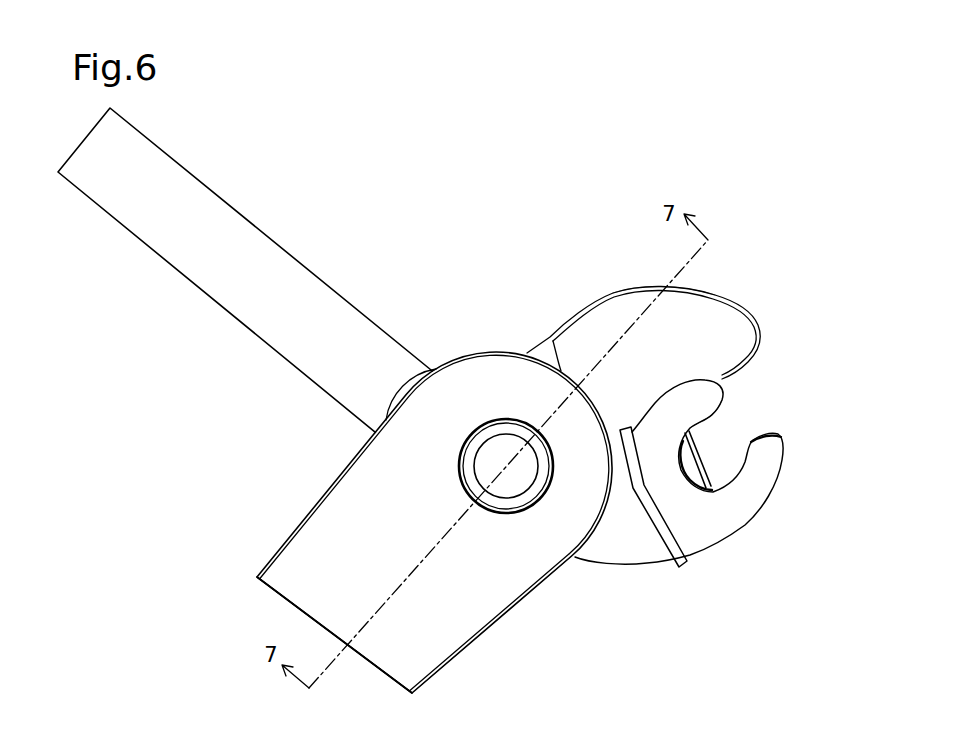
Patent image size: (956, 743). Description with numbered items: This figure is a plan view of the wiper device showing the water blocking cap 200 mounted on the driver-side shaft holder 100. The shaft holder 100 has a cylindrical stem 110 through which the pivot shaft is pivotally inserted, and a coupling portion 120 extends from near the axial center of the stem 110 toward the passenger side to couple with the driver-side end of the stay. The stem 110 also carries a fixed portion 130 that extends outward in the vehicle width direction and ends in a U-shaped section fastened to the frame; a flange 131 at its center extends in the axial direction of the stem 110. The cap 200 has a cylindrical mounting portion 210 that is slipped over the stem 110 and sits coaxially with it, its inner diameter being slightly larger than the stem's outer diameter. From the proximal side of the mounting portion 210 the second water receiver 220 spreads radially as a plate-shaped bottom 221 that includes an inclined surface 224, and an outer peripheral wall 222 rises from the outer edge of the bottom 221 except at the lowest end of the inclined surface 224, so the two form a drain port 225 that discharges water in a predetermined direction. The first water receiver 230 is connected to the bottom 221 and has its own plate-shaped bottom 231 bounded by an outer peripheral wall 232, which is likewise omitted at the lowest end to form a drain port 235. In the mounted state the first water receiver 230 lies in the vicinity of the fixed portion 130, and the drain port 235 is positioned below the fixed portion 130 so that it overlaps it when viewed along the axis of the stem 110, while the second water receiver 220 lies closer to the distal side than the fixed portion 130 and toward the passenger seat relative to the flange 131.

The driver-side shaft holder 100 is at (247, 270).
The stem 110 is at (507, 419).
The coupling portion 120 is at (255, 226).
The fixed portion 130 is at (720, 546).
The flange 131 is at (658, 533).
The water blocking cap 200 is at (404, 506).
The mounting portion 210 is at (460, 459).
The second water receiver 220 is at (318, 503).
The bottom 221 is at (532, 575).
The outer peripheral wall 222 is at (455, 658).
The inclined surface 224 is at (280, 581).
The drain port 225 is at (277, 622).
The first water receiver 230 is at (668, 371).
The bottom 231 is at (618, 322).
The outer peripheral wall 232 is at (556, 334).
The drain port 235 is at (720, 432).